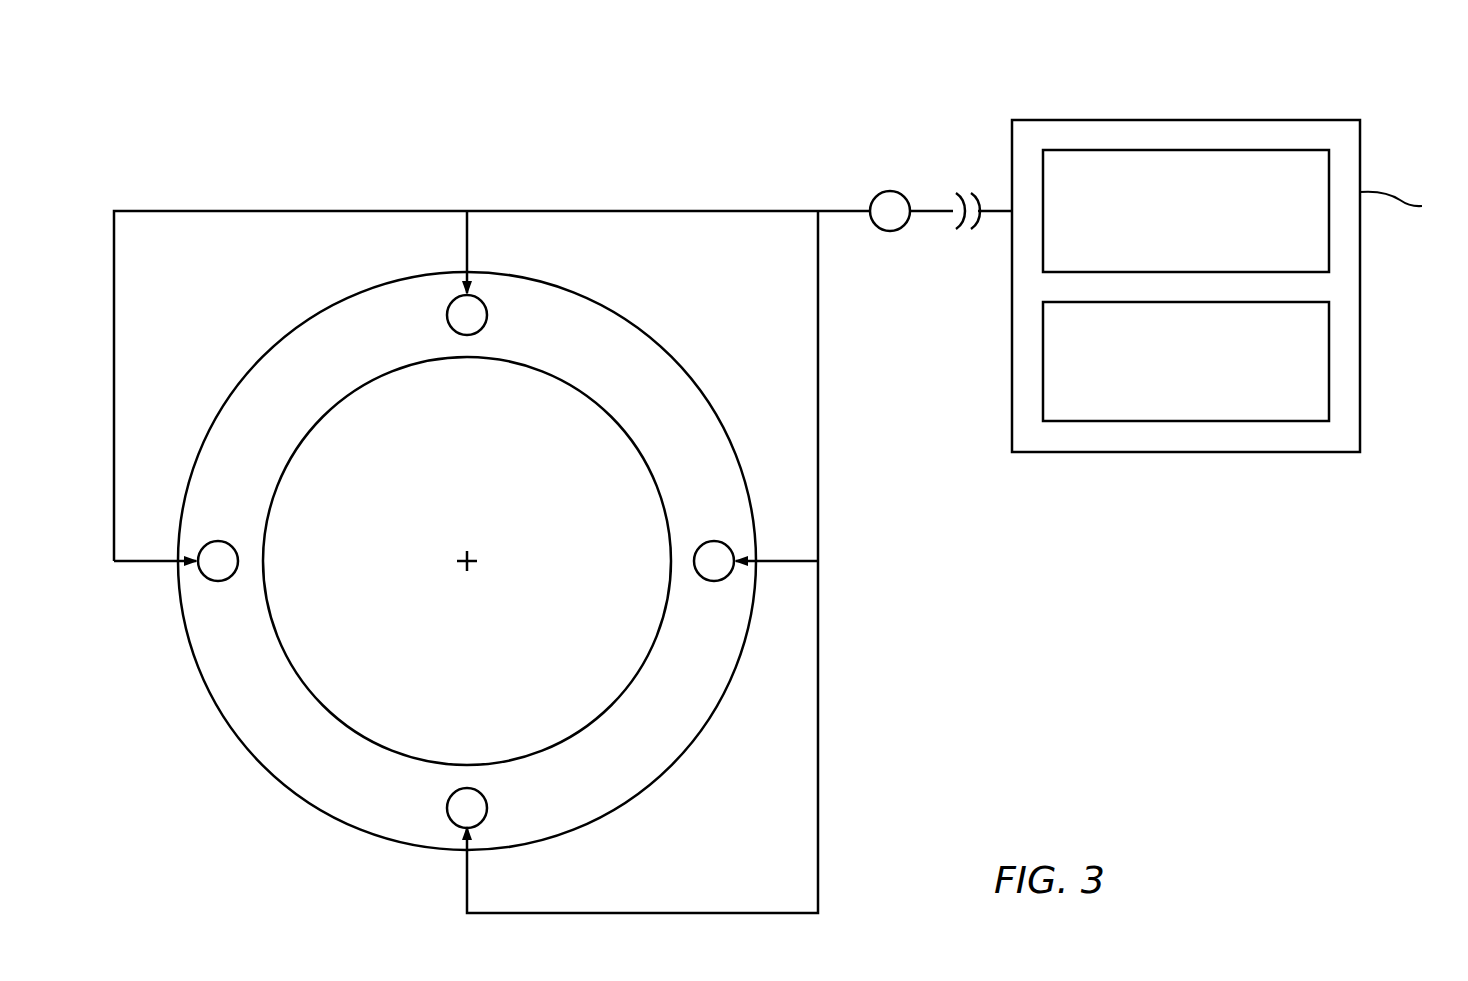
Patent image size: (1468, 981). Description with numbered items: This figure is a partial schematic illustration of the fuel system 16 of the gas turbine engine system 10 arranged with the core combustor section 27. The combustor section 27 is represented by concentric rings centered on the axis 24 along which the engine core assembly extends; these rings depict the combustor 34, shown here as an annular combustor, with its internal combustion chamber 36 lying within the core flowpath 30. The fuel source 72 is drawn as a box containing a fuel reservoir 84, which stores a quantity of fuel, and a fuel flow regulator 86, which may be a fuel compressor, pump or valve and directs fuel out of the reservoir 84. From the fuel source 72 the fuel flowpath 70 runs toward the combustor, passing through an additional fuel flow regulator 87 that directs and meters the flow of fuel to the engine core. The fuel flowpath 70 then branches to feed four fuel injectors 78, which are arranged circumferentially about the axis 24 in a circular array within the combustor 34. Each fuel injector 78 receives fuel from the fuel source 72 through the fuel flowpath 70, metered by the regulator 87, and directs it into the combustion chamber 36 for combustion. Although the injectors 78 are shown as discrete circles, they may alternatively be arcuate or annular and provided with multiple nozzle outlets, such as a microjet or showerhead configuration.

The gas turbine engine system 10 is at (140, 140).
The fuel system 16 is at (1278, 105).
The axis 24 is at (467, 566).
The core combustor section 27 is at (608, 262).
The core flowpath 30 is at (641, 385).
The combustor 34 is at (662, 334).
The combustion chamber 36 is at (675, 385).
The fuel flowpath 70 is at (750, 210).
The fuel source 72 is at (1410, 203).
The fuel injectors 78 is at (467, 335).
The fuel reservoir 84 is at (1172, 392).
The fuel flow regulator 86 is at (1172, 242).
The additional fuel flow regulator 87 is at (890, 191).